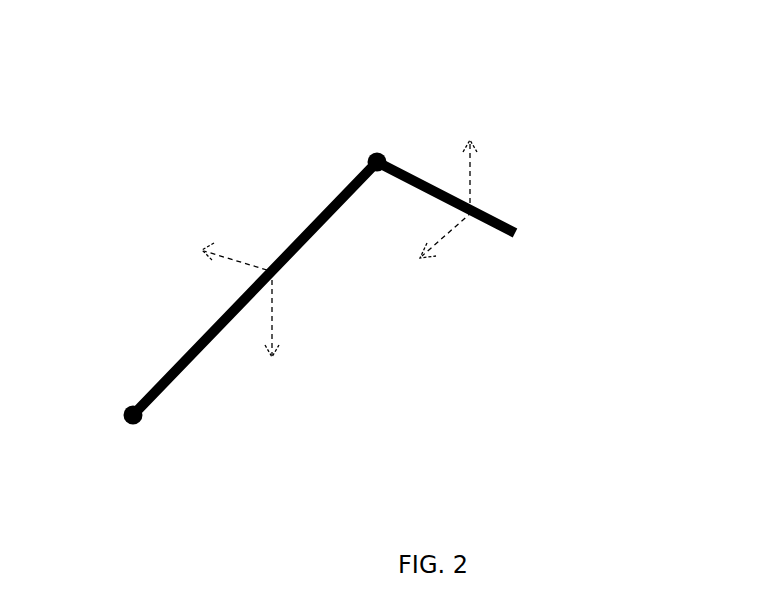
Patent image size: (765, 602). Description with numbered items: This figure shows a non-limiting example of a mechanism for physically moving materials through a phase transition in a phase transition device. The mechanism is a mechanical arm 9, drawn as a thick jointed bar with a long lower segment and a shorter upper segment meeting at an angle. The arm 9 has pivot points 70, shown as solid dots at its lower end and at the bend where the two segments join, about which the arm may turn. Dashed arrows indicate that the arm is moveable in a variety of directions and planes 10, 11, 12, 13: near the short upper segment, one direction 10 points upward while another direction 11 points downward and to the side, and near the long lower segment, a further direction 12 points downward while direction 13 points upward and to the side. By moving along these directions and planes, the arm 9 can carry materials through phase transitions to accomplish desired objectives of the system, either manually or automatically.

The mechanical arm 9 is at (208, 350).
The pivot points 70 is at (132, 408).
The direction of arm movement 10 is at (472, 182).
The direction of arm movement 11 is at (448, 235).
The direction of arm movement 12 is at (275, 312).
The direction of arm movement 13 is at (227, 262).